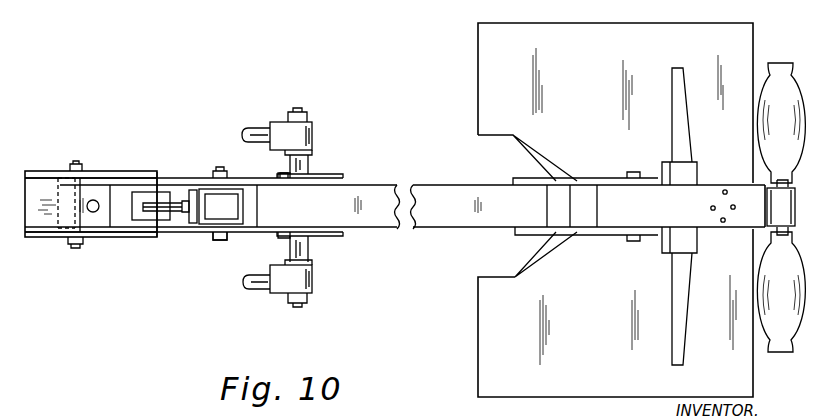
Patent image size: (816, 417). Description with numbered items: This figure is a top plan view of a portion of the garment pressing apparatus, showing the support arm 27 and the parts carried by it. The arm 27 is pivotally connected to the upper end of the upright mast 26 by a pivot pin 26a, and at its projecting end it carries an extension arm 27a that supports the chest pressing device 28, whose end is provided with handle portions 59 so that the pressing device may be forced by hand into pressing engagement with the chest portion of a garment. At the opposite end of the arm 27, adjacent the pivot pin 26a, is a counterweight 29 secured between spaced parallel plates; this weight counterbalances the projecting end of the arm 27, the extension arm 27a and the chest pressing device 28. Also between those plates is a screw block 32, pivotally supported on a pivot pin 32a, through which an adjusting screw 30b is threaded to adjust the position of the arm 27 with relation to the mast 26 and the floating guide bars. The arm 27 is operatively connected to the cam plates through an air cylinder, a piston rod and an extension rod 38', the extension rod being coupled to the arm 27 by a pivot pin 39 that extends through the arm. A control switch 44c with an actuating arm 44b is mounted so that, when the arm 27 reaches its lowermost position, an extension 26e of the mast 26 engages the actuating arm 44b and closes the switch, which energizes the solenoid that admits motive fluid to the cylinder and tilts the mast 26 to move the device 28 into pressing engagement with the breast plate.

The mast 26 is at (232, 205).
The pivot pin 26a is at (216, 240).
The extension of the mast 26e is at (192, 222).
The arm 27 is at (468, 183).
The extension arm 27a is at (740, 188).
The chest pressing device 28 is at (477, 383).
The counterweight 29 is at (38, 182).
The adjusting screw 30b is at (93, 199).
The screw block 32 is at (108, 216).
The pivot pin 32a is at (72, 249).
The extension rod 38' is at (266, 210).
The pivot pin 39 is at (312, 162).
The actuating arm 44b is at (174, 203).
The control switch 44c is at (157, 195).
The handle portions 59 is at (785, 63).